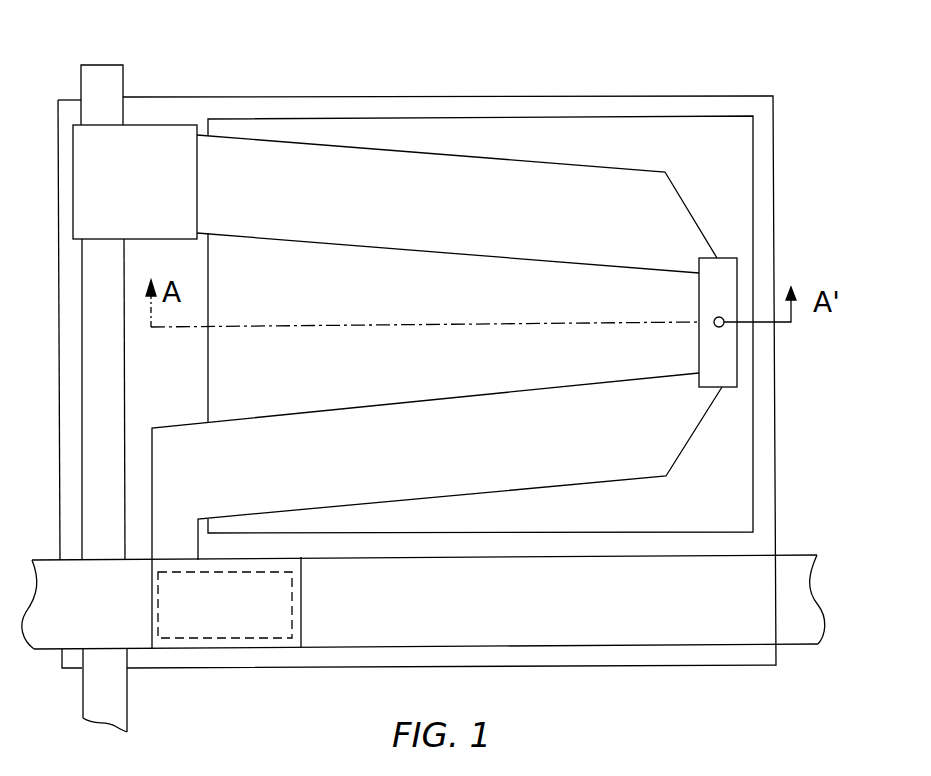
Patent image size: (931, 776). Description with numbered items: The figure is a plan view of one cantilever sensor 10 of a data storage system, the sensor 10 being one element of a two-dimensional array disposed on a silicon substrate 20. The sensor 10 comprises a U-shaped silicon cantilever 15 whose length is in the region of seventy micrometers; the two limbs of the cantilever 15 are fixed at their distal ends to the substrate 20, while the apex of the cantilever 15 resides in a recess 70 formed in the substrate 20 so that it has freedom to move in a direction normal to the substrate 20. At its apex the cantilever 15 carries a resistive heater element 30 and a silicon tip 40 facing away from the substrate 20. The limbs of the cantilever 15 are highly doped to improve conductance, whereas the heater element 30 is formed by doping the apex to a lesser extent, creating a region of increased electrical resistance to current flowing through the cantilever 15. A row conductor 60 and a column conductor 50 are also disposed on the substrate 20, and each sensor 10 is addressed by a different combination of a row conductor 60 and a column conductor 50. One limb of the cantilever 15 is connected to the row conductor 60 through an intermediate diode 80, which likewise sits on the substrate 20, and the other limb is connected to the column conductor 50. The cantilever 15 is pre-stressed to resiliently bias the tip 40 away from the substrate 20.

The cantilever sensor 10 is at (449, 77).
The U-shaped silicon cantilever 15 is at (590, 160).
The silicon substrate 20 is at (773, 127).
The resistive heater element 30 is at (738, 297).
The silicon tip 40 is at (721, 327).
The column conductor 50 is at (113, 72).
The row conductor 60 is at (658, 632).
The recess 70 is at (740, 471).
The diode 80 is at (192, 620).